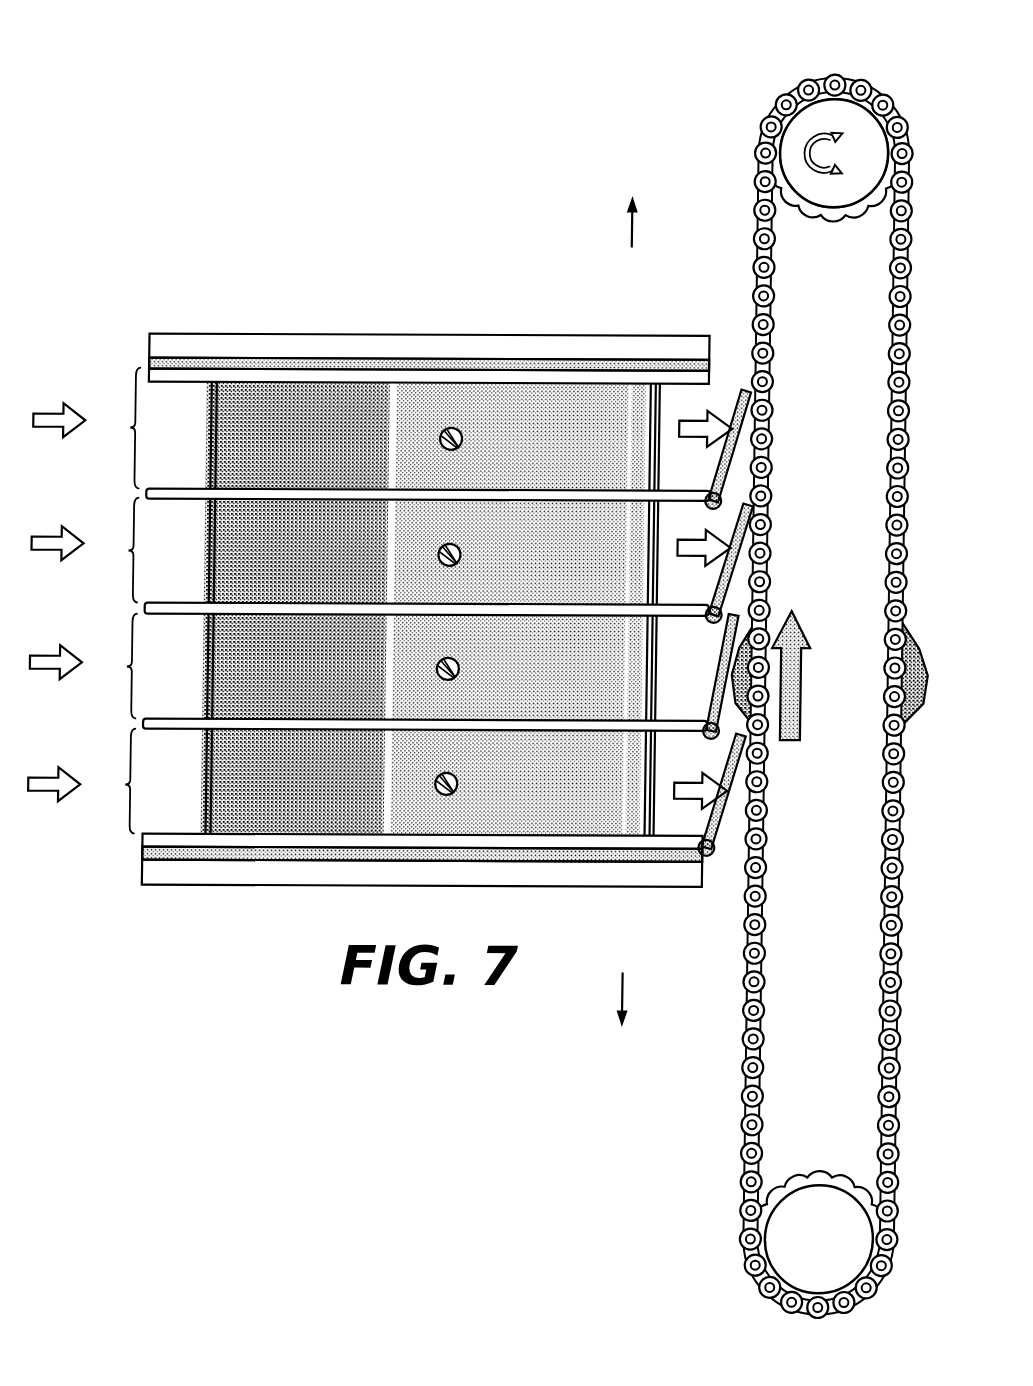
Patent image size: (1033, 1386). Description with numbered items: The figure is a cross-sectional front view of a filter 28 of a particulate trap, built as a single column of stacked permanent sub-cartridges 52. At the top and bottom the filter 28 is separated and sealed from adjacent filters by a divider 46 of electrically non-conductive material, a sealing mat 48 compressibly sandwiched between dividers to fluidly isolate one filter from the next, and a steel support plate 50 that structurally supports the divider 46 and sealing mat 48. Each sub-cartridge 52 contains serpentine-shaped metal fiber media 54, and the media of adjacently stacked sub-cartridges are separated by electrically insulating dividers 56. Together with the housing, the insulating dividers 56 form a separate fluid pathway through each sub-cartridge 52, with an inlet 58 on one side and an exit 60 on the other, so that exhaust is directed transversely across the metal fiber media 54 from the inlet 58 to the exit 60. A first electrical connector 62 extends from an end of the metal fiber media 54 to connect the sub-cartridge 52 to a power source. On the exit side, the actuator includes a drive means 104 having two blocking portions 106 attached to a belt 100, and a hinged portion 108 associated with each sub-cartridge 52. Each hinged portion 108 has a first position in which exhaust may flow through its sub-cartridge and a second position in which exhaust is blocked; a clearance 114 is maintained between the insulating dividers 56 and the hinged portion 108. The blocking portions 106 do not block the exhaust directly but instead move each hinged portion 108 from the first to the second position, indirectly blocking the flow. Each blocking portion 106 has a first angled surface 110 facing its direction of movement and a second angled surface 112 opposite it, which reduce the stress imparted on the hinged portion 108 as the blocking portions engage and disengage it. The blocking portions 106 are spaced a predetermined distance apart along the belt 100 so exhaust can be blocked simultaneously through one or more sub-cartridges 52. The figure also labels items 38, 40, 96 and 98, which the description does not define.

The filter 28 is at (390, 637).
The upward direction arrow 38 is at (613, 223).
The downward direction arrow 40 is at (604, 997).
The divider 46 is at (728, 388).
The sealing mat 48 is at (446, 351).
The support plate 50 is at (727, 368).
The sub-cartridge 52 is at (381, 601).
The metal fiber media 54 is at (558, 451).
The insulating divider 56 is at (170, 598).
The inlet 58 is at (190, 438).
The exit 60 is at (661, 440).
The first electrical connector 62 is at (459, 431).
The upper sprocket 96 is at (838, 163).
The lower sprocket 98 is at (812, 1249).
The belt 100 is at (892, 300).
The drive means 104 is at (830, 663).
The blocking portion 106 is at (830, 614).
The hinged portion 108 is at (703, 622).
The first angled surface 110 is at (761, 556).
The second angled surface 112 is at (892, 538).
The clearance 114 is at (718, 626).